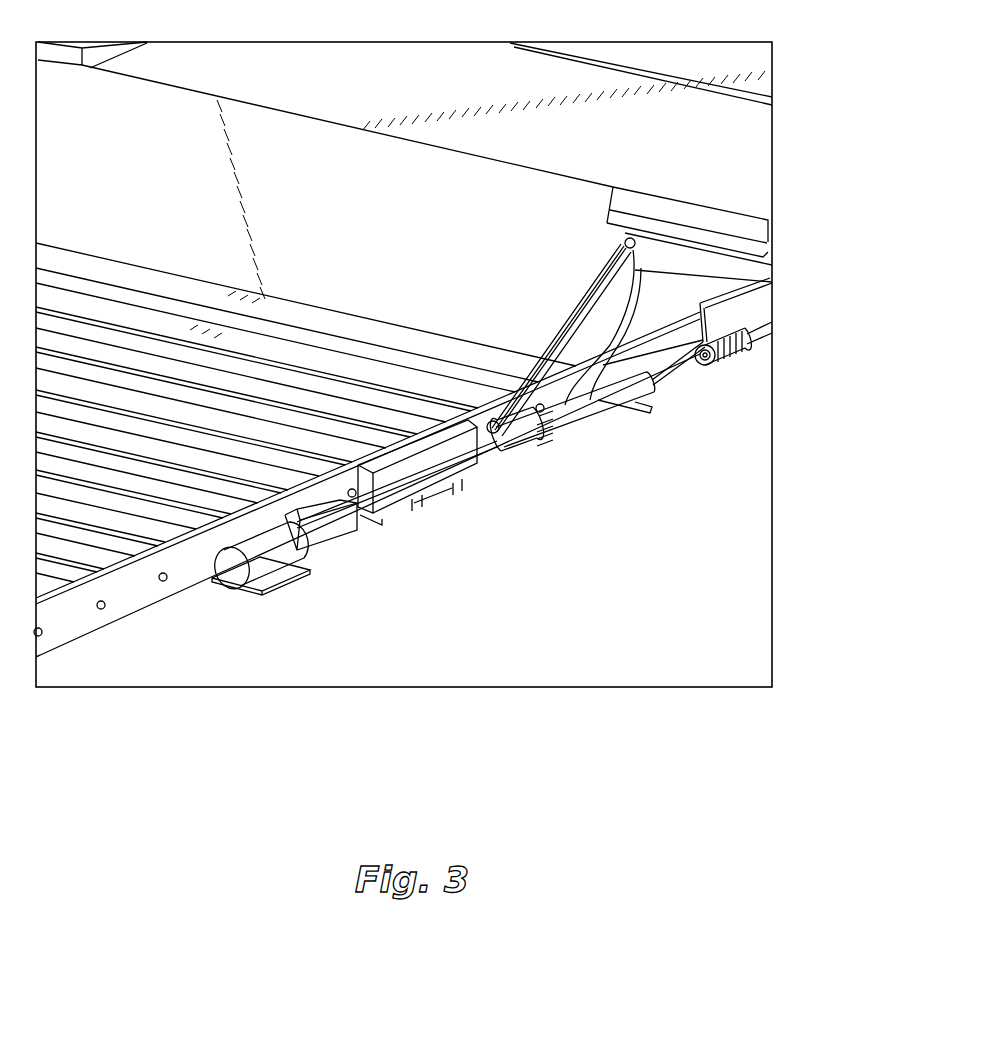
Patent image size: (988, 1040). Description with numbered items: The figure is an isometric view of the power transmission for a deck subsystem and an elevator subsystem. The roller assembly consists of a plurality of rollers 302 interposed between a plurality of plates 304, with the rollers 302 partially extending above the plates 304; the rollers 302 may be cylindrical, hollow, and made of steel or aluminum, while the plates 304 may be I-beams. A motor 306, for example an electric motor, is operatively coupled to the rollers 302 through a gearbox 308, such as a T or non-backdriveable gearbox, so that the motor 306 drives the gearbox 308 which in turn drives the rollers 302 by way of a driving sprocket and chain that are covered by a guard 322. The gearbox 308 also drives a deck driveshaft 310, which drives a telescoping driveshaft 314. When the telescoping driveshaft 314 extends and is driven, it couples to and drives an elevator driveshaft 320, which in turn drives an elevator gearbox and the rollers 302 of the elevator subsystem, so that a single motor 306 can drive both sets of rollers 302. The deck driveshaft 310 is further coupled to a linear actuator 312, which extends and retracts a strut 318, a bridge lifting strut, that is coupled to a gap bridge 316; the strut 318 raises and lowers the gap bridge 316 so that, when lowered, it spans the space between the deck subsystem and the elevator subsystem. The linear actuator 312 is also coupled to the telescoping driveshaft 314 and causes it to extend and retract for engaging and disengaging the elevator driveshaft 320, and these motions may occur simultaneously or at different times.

The rollers 302 is at (135, 556).
The plates 304 is at (168, 530).
The motor 306 is at (312, 582).
The gearbox 308 is at (360, 538).
The deck driveshaft 310 is at (406, 504).
The linear actuator 312 is at (478, 492).
The telescoping driveshaft 314 is at (592, 415).
The gap bridge 316 is at (381, 249).
The strut 318 is at (576, 348).
The elevator driveshaft 320 is at (736, 372).
The guard 322 is at (70, 618).